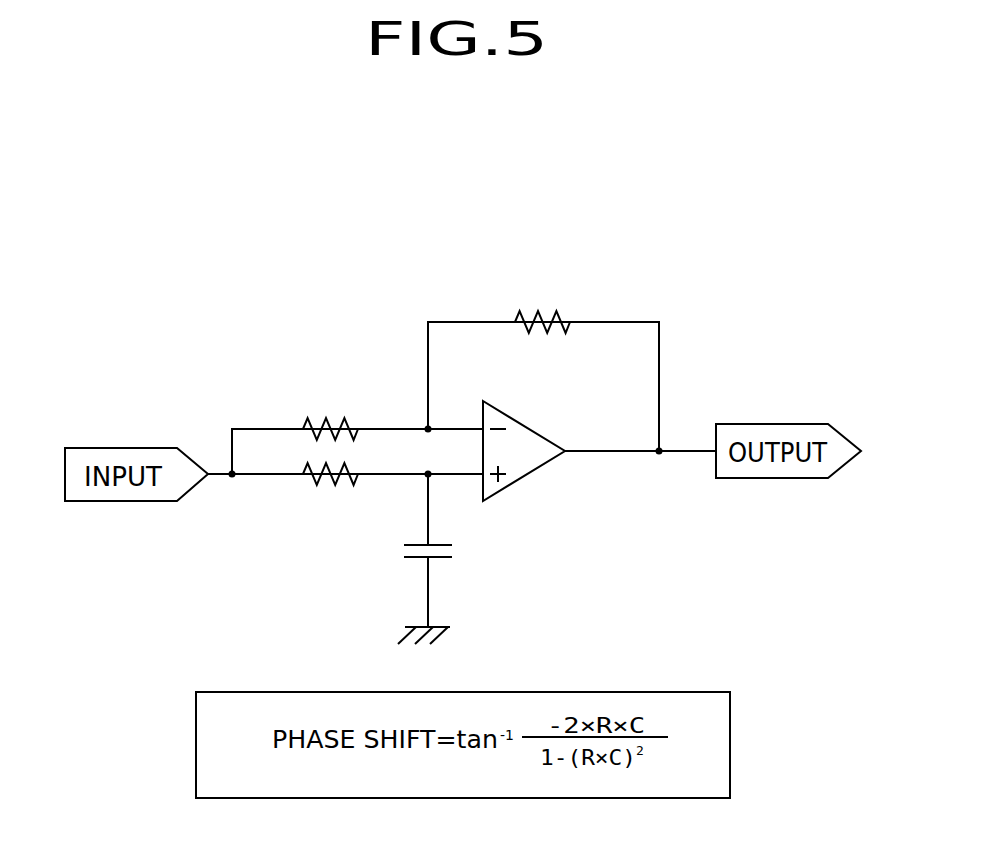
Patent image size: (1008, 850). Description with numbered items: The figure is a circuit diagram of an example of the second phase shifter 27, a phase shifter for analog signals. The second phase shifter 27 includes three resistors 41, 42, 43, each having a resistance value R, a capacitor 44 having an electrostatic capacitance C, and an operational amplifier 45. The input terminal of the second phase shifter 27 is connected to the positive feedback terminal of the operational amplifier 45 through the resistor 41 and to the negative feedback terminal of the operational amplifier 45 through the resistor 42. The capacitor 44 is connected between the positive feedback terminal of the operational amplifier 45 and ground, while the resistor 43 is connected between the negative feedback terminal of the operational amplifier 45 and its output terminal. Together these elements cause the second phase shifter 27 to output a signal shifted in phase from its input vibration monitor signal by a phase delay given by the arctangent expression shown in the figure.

The second phase shifter 27 is at (460, 246).
The resistor 41 is at (345, 478).
The resistor 42 is at (350, 430).
The resistor 43 is at (560, 318).
The capacitor 44 is at (450, 559).
The operational amplifier 45 is at (523, 478).